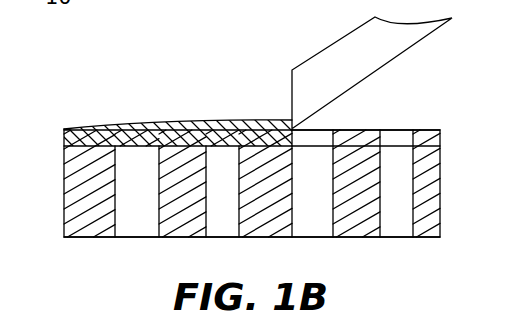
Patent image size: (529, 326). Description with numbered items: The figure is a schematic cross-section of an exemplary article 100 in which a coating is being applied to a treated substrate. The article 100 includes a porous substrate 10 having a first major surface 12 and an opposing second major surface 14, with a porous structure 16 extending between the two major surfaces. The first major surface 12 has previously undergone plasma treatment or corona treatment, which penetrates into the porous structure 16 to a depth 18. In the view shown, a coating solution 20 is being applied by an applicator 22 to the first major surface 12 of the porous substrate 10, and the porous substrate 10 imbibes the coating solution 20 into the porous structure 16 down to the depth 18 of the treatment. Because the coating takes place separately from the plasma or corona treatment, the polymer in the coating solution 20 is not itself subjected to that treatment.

The article 100 is at (146, 85).
The porous substrate 10 is at (85, 205).
The first major surface 12 is at (368, 128).
The second major surface 14 is at (102, 238).
The porous structure 16 is at (355, 208).
The depth 18 is at (415, 146).
The coating solution 20 is at (245, 123).
The applicator 22 is at (327, 62).